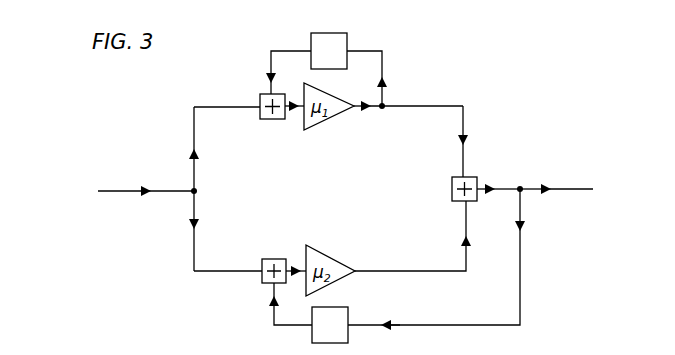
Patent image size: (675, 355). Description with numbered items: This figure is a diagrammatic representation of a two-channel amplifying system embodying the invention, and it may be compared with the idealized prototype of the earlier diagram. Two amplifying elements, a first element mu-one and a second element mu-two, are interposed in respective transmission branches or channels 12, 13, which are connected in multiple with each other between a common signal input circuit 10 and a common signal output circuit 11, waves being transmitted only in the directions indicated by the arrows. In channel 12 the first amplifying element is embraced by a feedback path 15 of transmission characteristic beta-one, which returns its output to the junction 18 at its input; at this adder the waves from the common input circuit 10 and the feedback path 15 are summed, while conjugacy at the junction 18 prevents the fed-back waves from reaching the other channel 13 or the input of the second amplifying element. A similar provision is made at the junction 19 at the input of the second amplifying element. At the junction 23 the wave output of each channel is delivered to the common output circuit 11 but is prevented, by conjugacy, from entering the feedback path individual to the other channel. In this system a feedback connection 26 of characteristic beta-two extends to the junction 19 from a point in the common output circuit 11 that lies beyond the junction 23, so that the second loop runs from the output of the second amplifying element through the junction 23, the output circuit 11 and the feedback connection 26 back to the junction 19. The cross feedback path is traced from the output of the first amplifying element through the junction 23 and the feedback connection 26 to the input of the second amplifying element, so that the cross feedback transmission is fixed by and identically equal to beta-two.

The common signal input circuit 10 is at (128, 191).
The common signal output circuit 11 is at (575, 189).
The transmission branch or channel 12 is at (228, 107).
The transmission branch or channel 13 is at (215, 271).
The feedback path 15 is at (368, 51).
The junction 18 is at (264, 120).
The junction 19 is at (270, 259).
The junction 23 is at (476, 177).
The feedback connection 26 is at (421, 324).